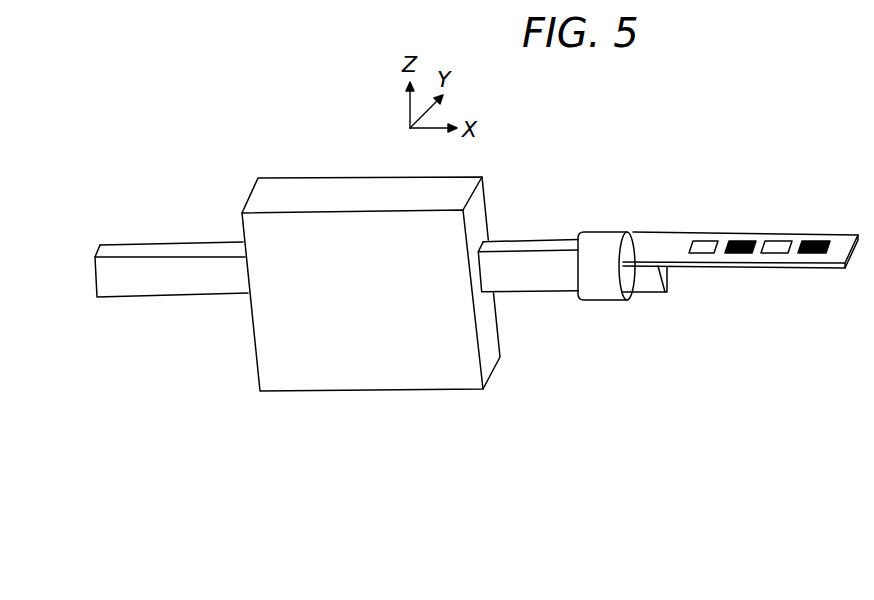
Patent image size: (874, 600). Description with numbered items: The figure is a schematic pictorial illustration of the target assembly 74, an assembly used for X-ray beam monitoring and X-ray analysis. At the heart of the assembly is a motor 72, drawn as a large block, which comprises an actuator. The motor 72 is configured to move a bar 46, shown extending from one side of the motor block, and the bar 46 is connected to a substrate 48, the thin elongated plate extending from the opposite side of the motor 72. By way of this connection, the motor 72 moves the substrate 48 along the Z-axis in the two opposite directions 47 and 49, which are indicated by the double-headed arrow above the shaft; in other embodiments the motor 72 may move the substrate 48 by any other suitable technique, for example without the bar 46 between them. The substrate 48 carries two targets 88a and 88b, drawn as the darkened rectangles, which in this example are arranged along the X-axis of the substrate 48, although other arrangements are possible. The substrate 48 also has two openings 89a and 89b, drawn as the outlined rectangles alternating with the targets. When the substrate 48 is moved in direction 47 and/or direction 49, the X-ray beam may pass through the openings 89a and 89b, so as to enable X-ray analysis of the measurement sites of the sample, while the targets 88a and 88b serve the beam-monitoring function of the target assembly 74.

The bar 46 is at (195, 242).
The motor 72 is at (312, 178).
The direction 47 is at (572, 197).
The direction 49 is at (572, 266).
The target assembly 74 is at (785, 105).
The substrate 48 is at (740, 264).
The target 88a is at (741, 241).
The target 88b is at (811, 241).
The opening 89a is at (780, 253).
The opening 89b is at (710, 253).